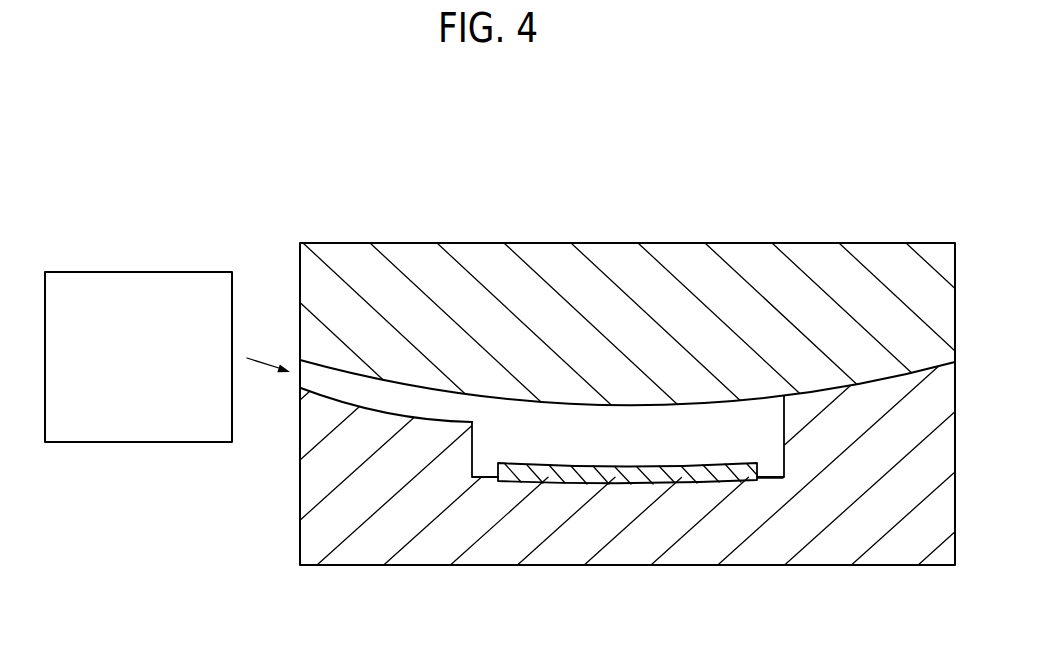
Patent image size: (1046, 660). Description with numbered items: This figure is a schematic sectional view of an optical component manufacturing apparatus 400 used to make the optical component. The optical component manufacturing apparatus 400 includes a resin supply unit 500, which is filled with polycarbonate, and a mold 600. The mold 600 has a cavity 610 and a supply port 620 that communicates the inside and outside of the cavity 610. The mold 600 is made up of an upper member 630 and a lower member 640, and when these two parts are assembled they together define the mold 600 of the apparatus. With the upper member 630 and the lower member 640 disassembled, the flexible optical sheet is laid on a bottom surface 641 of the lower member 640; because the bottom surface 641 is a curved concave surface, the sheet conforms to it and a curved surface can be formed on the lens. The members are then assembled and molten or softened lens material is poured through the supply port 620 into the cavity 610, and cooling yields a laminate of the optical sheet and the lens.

The optical component manufacturing apparatus 400 is at (468, 132).
The resin supply unit 500 is at (143, 270).
The mold 600 is at (880, 228).
The cavity 610 is at (629, 445).
The supply port 620 is at (310, 377).
The upper member 630 is at (675, 253).
The lower member 640 is at (906, 555).
The bottom surface 641 is at (773, 477).